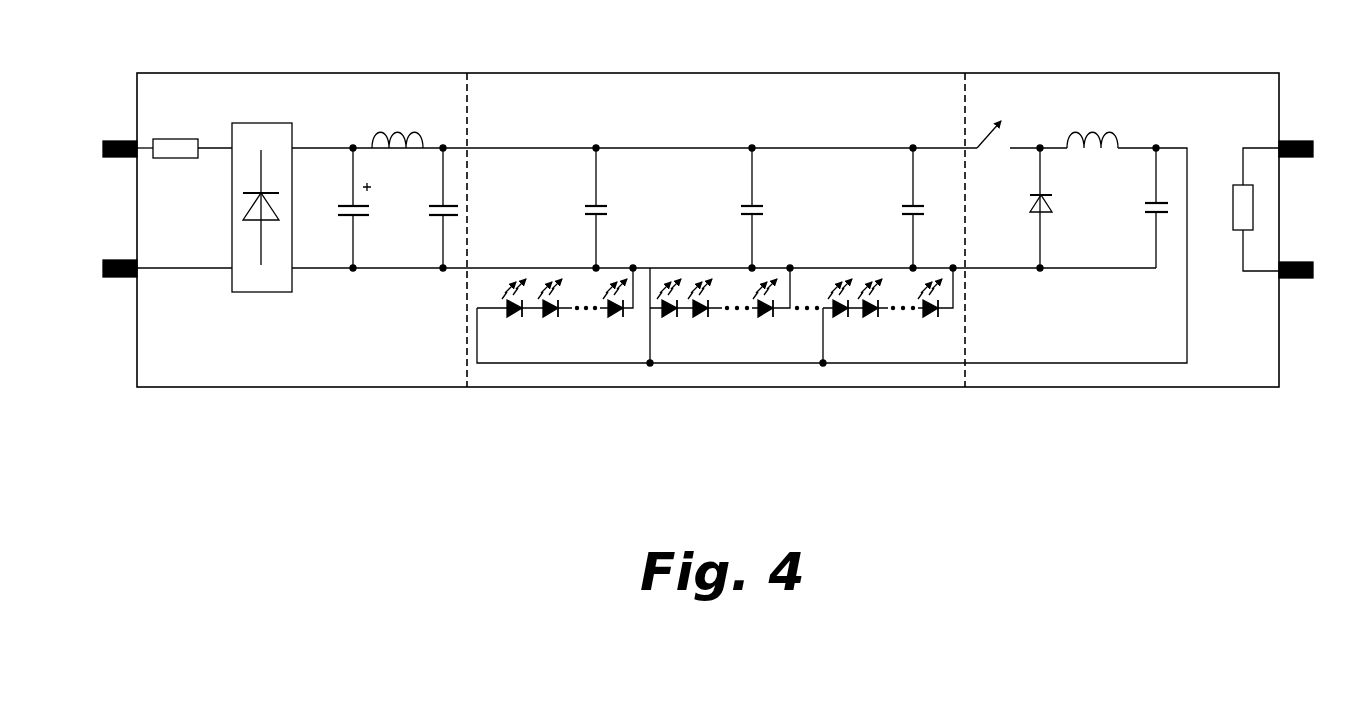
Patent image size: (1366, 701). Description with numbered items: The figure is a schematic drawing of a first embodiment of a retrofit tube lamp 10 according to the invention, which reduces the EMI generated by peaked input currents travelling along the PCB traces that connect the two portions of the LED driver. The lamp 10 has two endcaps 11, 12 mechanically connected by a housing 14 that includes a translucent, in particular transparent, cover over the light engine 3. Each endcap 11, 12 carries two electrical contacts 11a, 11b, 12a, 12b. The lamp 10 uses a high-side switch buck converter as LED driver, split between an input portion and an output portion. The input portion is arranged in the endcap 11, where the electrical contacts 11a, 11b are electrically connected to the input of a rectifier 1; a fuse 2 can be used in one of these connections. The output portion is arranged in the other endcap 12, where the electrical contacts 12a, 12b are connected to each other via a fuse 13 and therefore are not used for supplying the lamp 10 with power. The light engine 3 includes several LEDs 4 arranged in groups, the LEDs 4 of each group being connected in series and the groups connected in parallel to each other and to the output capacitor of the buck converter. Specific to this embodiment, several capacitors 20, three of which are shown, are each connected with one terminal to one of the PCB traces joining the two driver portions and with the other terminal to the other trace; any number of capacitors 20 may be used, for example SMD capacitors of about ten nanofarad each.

The rectifier 1 is at (267, 293).
The fuse 2 is at (172, 140).
The light engine 3 is at (462, 342).
The LED 4 is at (513, 322).
The retrofit tube lamp 10 is at (686, 419).
The endcap 11 is at (298, 387).
The electrical contact 11a is at (123, 141).
The electrical contact 11b is at (123, 260).
The endcap 12 is at (1127, 387).
The electrical contact 12a is at (1290, 141).
The electrical contact 12b is at (1290, 262).
The fuse 13 is at (1233, 207).
The housing 14 is at (575, 72).
The capacitor 20 is at (592, 203).